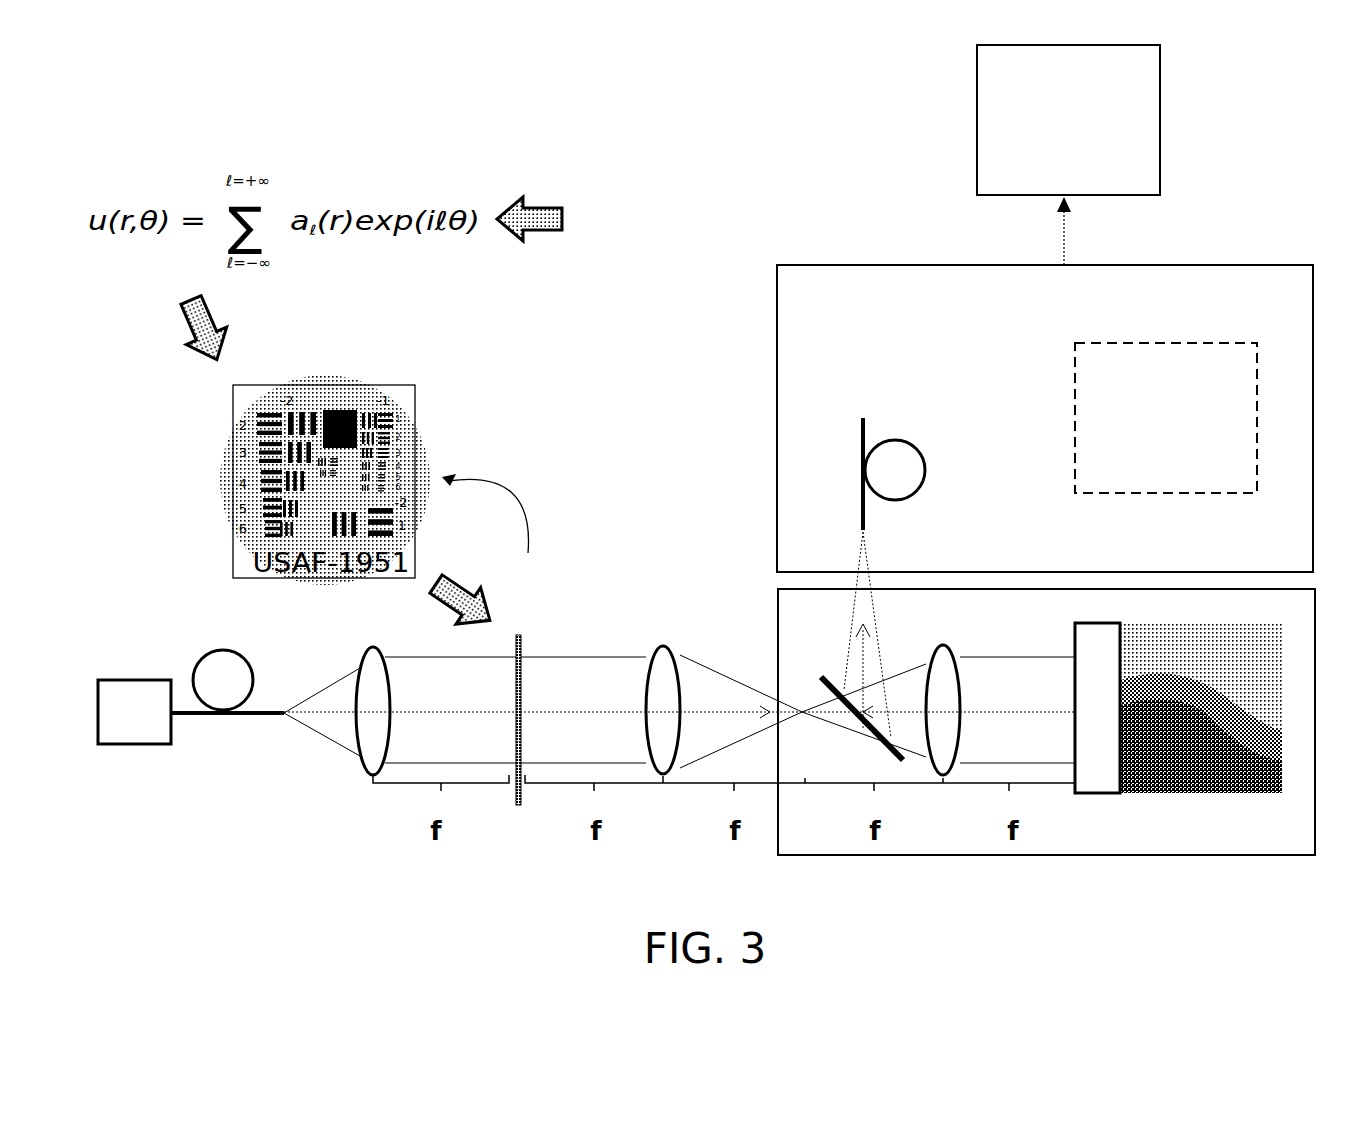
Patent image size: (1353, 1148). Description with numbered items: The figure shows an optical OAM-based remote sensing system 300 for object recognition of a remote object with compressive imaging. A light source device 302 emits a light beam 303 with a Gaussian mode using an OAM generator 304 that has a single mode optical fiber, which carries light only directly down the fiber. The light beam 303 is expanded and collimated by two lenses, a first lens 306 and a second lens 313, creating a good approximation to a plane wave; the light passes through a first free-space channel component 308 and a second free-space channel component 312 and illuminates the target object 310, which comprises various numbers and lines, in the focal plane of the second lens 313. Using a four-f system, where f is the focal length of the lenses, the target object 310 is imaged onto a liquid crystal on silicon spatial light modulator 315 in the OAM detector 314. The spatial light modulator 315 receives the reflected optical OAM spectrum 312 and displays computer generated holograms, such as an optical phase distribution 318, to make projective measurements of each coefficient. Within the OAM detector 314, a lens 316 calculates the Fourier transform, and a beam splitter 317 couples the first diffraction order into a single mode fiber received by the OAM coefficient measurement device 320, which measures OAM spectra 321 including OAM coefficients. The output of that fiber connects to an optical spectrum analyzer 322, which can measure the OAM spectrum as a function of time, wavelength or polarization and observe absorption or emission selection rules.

The optical OAM-based remote sensing system 300 is at (188, 60).
The light source device 302 is at (127, 746).
The light beam 303 is at (313, 730).
The OAM generator 304 is at (233, 760).
The first lens 306 is at (364, 778).
The first free-space channel component 308 is at (474, 745).
The remote object 310 is at (525, 644).
The reflected optical OAM spectrum 312 is at (575, 745).
The second lens 313 is at (653, 785).
The OAM detector 314 is at (1046, 722).
The liquid crystal on silicon spatial light modulator 315 is at (1100, 795).
The lens 316 is at (943, 780).
The beam splitter 317 is at (802, 675).
The optical phase distribution 318 is at (1210, 790).
The OAM coefficient measurement device 320 is at (1045, 384).
The OAM spectra 321 is at (1166, 418).
The optical spectrum analyzer 322 is at (1068, 120).